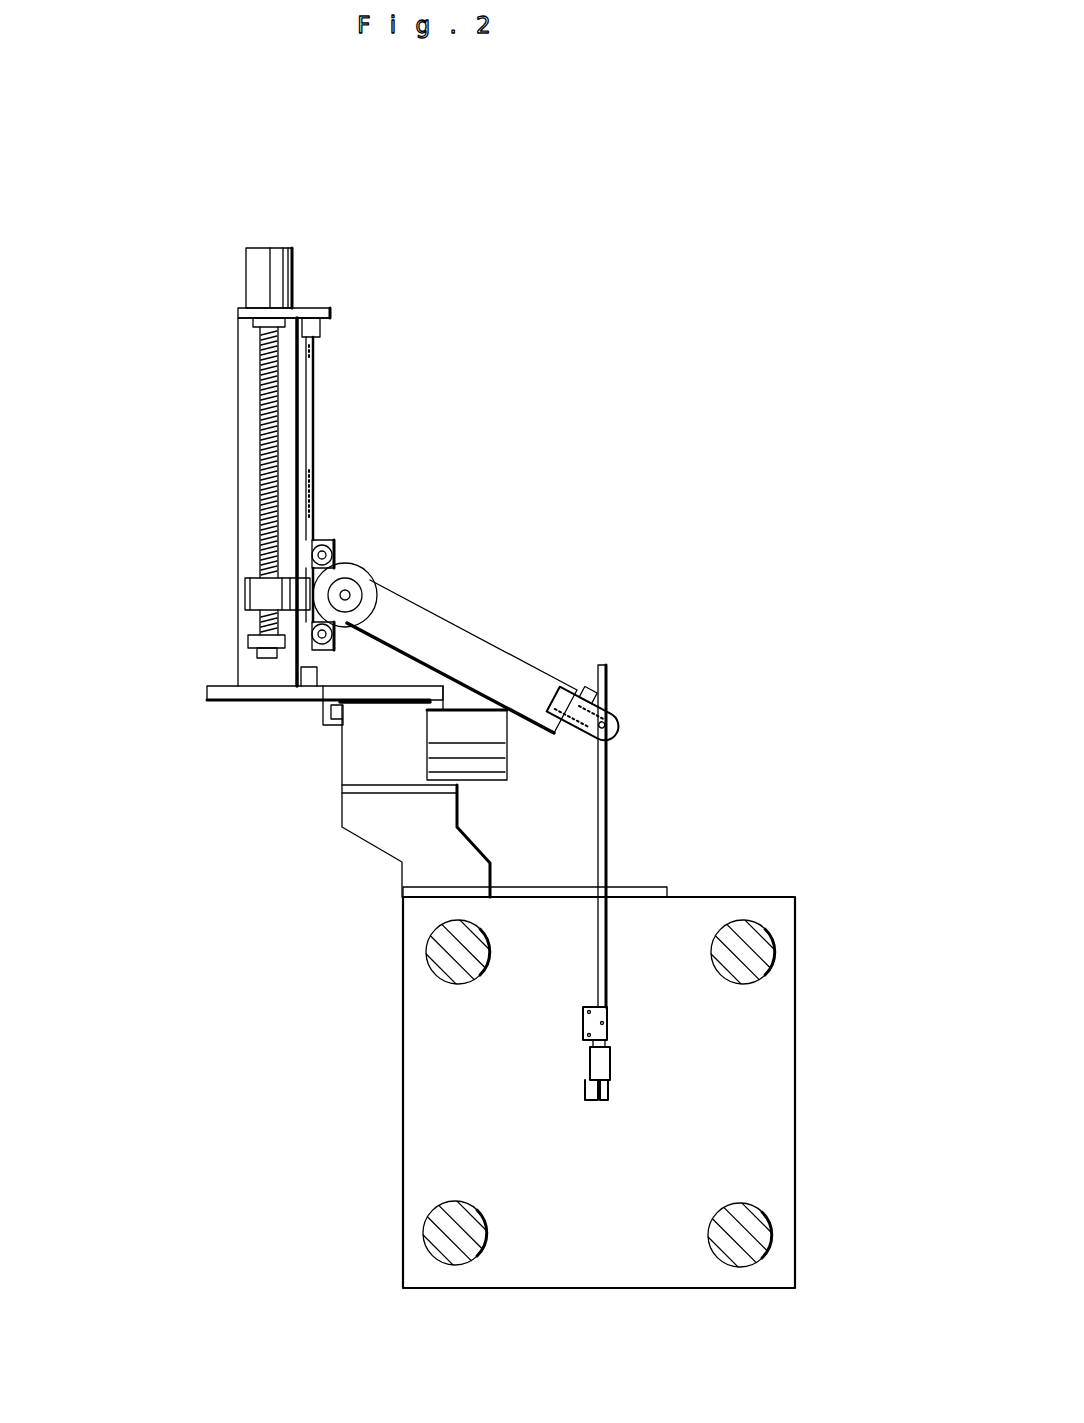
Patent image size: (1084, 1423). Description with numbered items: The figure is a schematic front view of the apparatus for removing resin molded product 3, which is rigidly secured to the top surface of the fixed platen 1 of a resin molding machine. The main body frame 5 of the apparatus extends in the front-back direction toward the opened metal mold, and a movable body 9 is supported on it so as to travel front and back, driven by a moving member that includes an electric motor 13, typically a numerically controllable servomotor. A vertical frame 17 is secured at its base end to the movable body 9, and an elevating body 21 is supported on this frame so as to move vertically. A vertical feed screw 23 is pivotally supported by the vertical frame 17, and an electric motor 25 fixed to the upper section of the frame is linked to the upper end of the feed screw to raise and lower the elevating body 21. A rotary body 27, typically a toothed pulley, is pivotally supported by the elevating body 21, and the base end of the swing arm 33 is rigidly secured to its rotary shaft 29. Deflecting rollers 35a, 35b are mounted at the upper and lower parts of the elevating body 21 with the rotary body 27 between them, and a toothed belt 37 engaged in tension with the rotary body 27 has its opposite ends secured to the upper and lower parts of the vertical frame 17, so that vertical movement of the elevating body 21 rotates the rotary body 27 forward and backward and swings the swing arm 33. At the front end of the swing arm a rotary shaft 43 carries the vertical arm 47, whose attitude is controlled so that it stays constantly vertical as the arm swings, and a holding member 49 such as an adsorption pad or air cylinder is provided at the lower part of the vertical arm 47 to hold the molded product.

The fixed platen 1 is at (443, 1062).
The apparatus for removing resin molded product 3 is at (547, 485).
The main body frame 5 is at (378, 813).
The movable body 9 is at (333, 692).
The electric motor 13 is at (488, 777).
The vertical frame 17 is at (250, 452).
The elevating body 21 is at (260, 594).
The vertical feed screw 23 is at (260, 522).
The electric motor 25 is at (272, 292).
The rotary body 27 is at (350, 572).
The rotary shaft 29 is at (347, 593).
The swing arm 33 is at (477, 667).
The deflecting roller 35a is at (321, 548).
The deflecting roller 35b is at (310, 642).
The toothed belt 37 is at (312, 358).
The rotary shaft 43 is at (622, 733).
The vertical arm 47 is at (602, 823).
The holding member 49 is at (600, 1067).